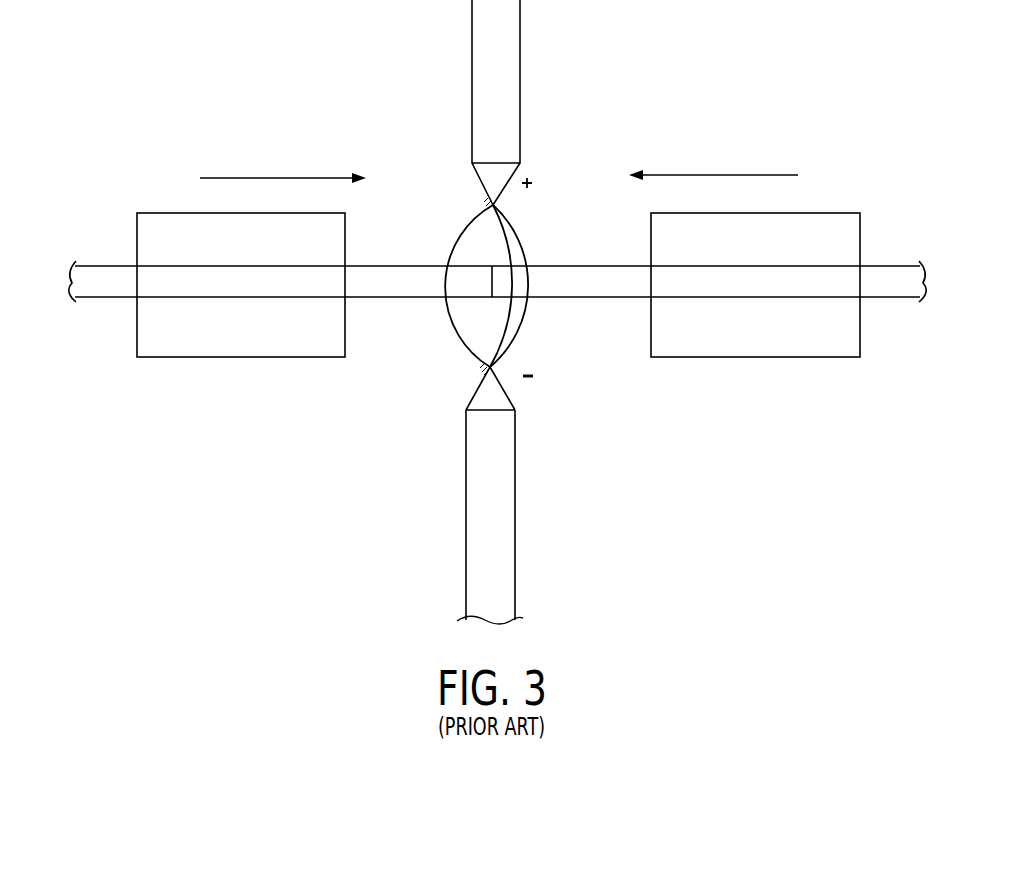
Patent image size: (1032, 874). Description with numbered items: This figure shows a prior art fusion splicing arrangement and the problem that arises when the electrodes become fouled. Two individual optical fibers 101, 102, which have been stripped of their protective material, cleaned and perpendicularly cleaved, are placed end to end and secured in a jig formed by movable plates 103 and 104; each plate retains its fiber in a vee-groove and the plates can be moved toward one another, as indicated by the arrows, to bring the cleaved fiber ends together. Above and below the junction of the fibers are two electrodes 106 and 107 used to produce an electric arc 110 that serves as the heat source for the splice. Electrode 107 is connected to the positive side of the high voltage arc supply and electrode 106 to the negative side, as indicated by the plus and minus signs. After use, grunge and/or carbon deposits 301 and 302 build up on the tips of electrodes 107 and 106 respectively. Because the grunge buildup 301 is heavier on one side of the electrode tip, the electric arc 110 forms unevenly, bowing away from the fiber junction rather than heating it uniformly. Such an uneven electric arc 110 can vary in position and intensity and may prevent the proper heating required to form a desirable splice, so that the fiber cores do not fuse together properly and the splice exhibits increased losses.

The optical fiber 101 is at (112, 273).
The optical fiber 102 is at (877, 288).
The movable plate 103 is at (212, 347).
The movable plate 104 is at (833, 221).
The electrode 106 is at (500, 509).
The electrode 107 is at (513, 70).
The electric arc 110 is at (520, 248).
The grunge and/or carbon deposit buildup 301 is at (475, 190).
The grunge and/or carbon deposit buildup 302 is at (470, 386).